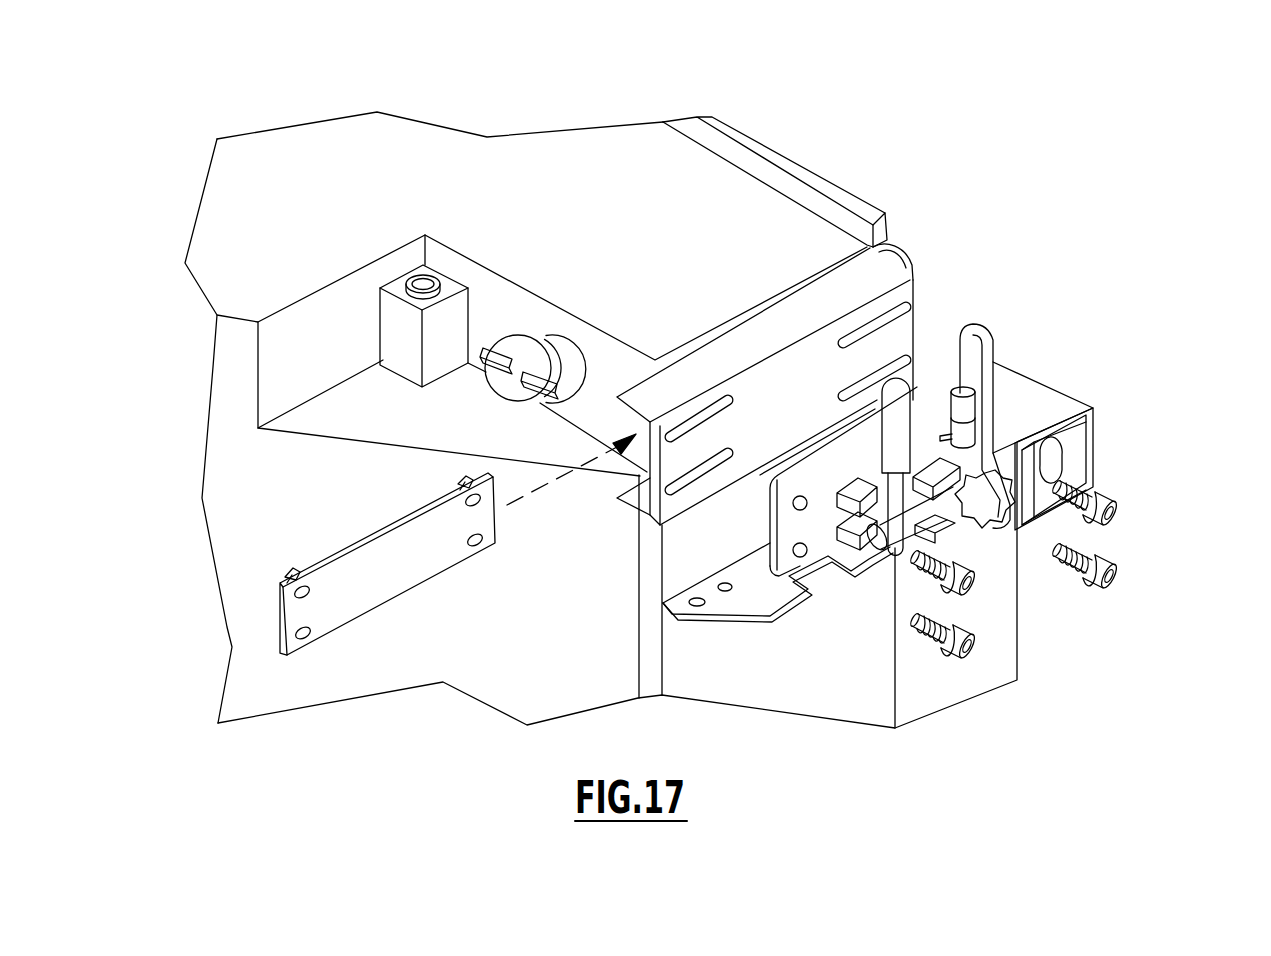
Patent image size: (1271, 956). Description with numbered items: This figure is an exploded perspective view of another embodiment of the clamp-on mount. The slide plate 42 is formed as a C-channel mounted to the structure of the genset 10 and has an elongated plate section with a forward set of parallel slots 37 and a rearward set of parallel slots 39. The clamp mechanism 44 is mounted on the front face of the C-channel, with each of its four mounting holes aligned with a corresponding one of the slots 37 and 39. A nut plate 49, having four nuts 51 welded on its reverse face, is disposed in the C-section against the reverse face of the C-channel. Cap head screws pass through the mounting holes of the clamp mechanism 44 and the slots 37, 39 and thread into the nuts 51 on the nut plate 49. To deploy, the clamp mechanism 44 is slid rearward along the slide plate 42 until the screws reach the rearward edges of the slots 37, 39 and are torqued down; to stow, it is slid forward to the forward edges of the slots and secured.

The genset 10 is at (803, 177).
The forward set of parallel slots 37 is at (700, 405).
The rearward set of parallel slots 39 is at (892, 300).
The slide plate 42 is at (683, 510).
The clamp mechanism 44 is at (1047, 393).
The nut plate 49 is at (383, 583).
The nuts 51 is at (297, 573).